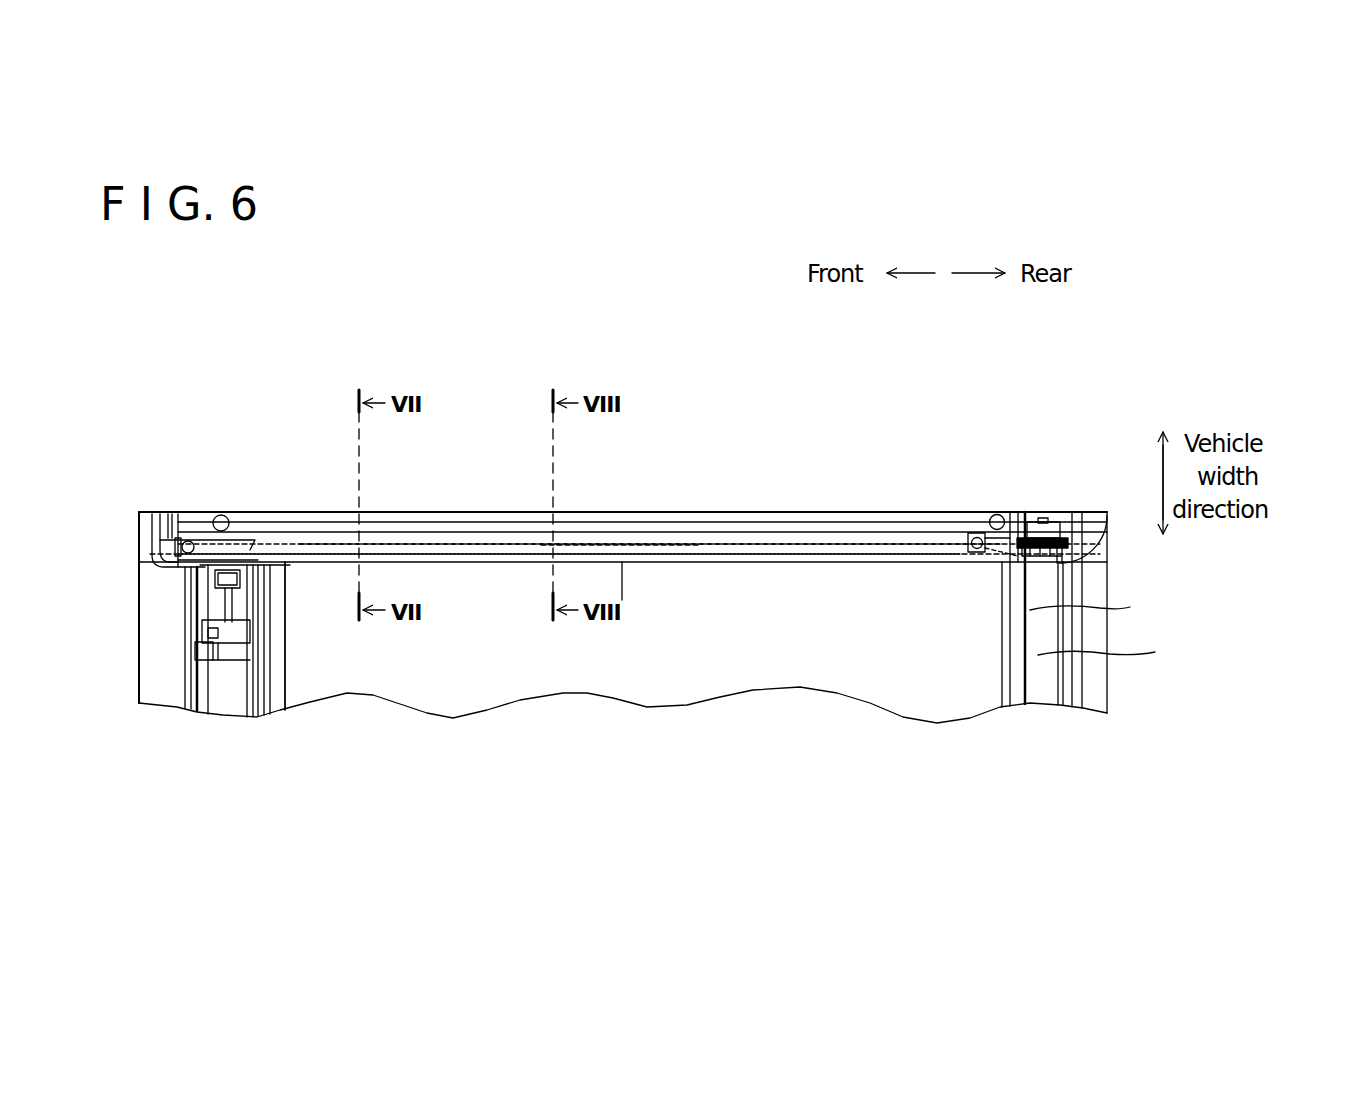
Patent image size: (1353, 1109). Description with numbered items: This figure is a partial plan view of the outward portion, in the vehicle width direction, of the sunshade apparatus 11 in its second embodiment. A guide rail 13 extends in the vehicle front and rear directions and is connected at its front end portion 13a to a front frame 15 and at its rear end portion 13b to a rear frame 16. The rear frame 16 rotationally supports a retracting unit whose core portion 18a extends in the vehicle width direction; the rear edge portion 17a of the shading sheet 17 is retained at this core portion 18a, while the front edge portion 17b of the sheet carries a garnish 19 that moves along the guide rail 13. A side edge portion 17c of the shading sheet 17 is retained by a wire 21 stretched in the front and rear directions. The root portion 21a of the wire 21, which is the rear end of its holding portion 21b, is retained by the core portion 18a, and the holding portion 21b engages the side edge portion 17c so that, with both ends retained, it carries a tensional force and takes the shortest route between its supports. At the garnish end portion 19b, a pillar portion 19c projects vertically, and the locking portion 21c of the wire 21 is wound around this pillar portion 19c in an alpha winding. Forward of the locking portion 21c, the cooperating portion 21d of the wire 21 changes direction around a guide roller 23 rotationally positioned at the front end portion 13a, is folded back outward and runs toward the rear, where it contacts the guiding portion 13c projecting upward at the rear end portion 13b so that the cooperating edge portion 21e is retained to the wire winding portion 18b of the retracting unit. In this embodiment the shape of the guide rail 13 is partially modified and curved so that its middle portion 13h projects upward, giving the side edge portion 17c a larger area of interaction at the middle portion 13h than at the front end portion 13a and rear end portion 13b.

The sunshade apparatus 11 is at (600, 332).
The guide rail 13 is at (777, 497).
The front end portion 13a is at (221, 505).
The rear end portion 13b is at (986, 500).
The guiding portion 13c is at (970, 538).
The middle portion 13h is at (541, 485).
The front frame 15 is at (123, 670).
The rear frame 16 is at (1115, 700).
The shading sheet 17 is at (493, 625).
The rear edge portion 17a is at (1106, 607).
The front edge portion 17b is at (280, 638).
The side edge portion 17c is at (622, 560).
The core portion 18a is at (1121, 652).
The wire winding portion 18b is at (1068, 560).
The garnish 19 is at (266, 707).
The garnish end portion 19b is at (212, 598).
The pillar portion 19c is at (232, 566).
The wire 21 is at (380, 533).
The root portion 21a is at (1085, 550).
The holding portion 21b is at (433, 560).
The locking portion 21c is at (252, 550).
The cooperating portion 21d is at (213, 558).
The cooperating edge portion 21e is at (1040, 538).
The guide roller 23 is at (152, 545).